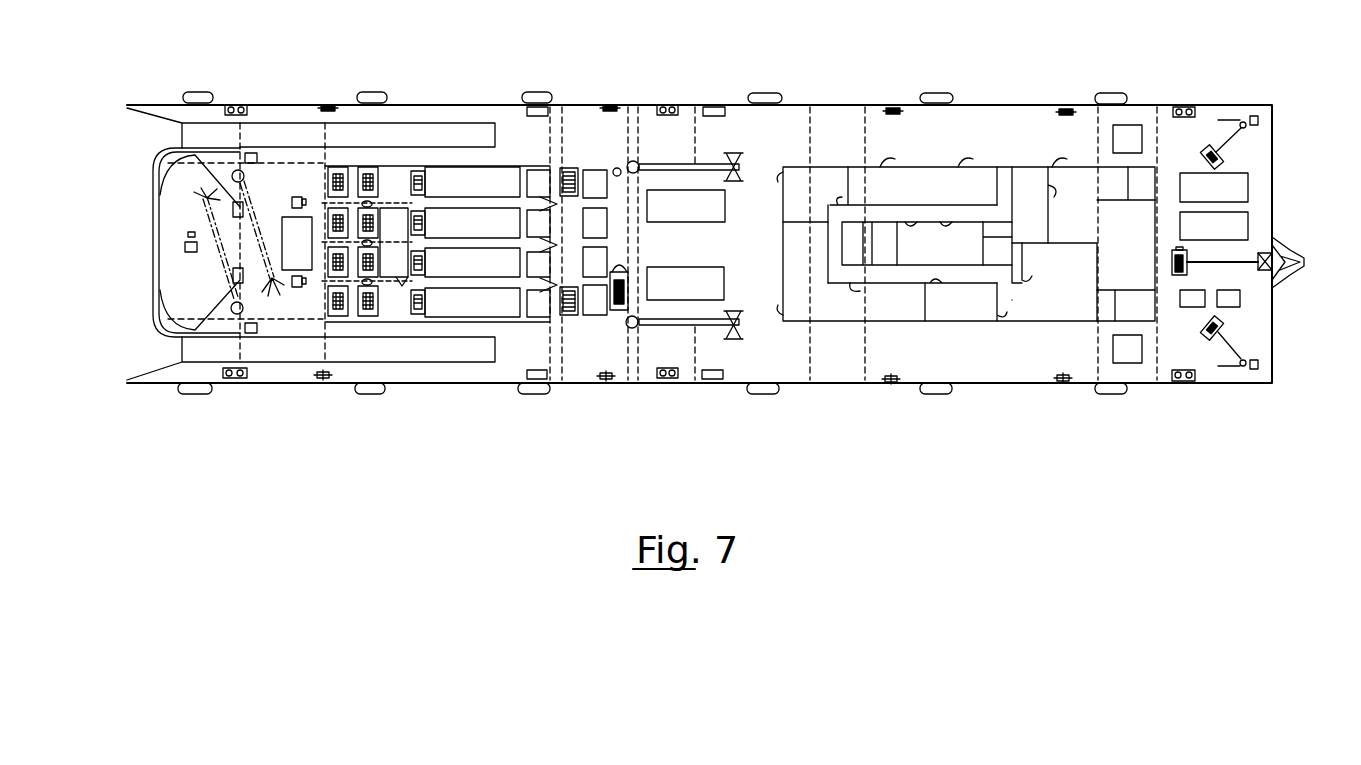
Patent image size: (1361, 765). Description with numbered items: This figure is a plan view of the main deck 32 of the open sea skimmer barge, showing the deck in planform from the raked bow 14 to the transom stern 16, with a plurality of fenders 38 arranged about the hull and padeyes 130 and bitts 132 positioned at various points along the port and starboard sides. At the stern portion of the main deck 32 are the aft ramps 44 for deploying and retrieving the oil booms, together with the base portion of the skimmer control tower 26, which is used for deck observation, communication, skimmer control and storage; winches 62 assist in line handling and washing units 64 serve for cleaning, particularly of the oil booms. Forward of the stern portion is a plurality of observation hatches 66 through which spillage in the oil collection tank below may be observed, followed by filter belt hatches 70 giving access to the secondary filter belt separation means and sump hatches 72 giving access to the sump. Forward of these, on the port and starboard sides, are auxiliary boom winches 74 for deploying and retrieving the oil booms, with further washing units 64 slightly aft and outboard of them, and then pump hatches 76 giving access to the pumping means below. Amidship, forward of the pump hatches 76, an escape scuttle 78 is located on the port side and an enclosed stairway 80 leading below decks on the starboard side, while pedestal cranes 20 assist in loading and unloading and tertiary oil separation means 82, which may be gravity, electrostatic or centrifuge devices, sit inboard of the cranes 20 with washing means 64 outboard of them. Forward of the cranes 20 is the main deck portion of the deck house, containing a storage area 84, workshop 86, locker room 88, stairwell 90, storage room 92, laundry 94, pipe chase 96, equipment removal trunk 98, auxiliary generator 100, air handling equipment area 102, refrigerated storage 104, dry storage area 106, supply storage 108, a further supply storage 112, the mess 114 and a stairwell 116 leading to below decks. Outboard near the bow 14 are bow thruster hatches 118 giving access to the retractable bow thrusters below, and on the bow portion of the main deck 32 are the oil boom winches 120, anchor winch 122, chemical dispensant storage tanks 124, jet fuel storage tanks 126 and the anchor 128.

The raked bow 14 is at (1273, 147).
The transom stern 16 is at (153, 208).
The pedestal cranes 20 is at (233, 173).
The skimmer control tower 26 is at (302, 218).
The main deck 32 is at (878, 122).
The fenders 38 is at (198, 93).
The aft ramps 44 is at (423, 147).
The winches 62 is at (185, 247).
The washing units 64 is at (233, 205).
The observation hatches 66 is at (364, 175).
The filter belt hatches 70 is at (455, 180).
The sump hatches 72 is at (540, 180).
The auxiliary boom winches 74 is at (573, 168).
The pump hatches 76 is at (594, 217).
The escape scuttle 78 is at (617, 168).
The enclosed stairway 80 is at (618, 312).
The tertiary oil separation means 82 is at (698, 207).
The storage area 84 is at (828, 180).
The workshop 86 is at (793, 238).
The locker room 88 is at (860, 180).
The stairwell 90 is at (850, 253).
The storage room 92 is at (880, 247).
The laundry 94 is at (920, 240).
The pipe chase 96 is at (994, 253).
The equipment removal trunk 98 is at (997, 228).
The auxiliary generator 100 is at (887, 300).
The air handling equipment area 102 is at (972, 307).
The refrigerated storage 104 is at (1027, 185).
The dry storage area 106 is at (1085, 190).
The supply storage 108 is at (1112, 183).
The supply storage 112 is at (1147, 307).
The mess 114 is at (1053, 303).
The stairwell 116 is at (1018, 300).
The bow thruster hatches 118 is at (1130, 138).
The oil boom winches 120 is at (1220, 157).
The anchor winch 122 is at (1187, 268).
The chemical dispensant storage tanks 124 is at (1235, 228).
The jet fuel storage tanks 126 is at (1228, 298).
The anchor 128 is at (1287, 248).
The padeyes 130 is at (327, 104).
The bitts 132 is at (237, 106).